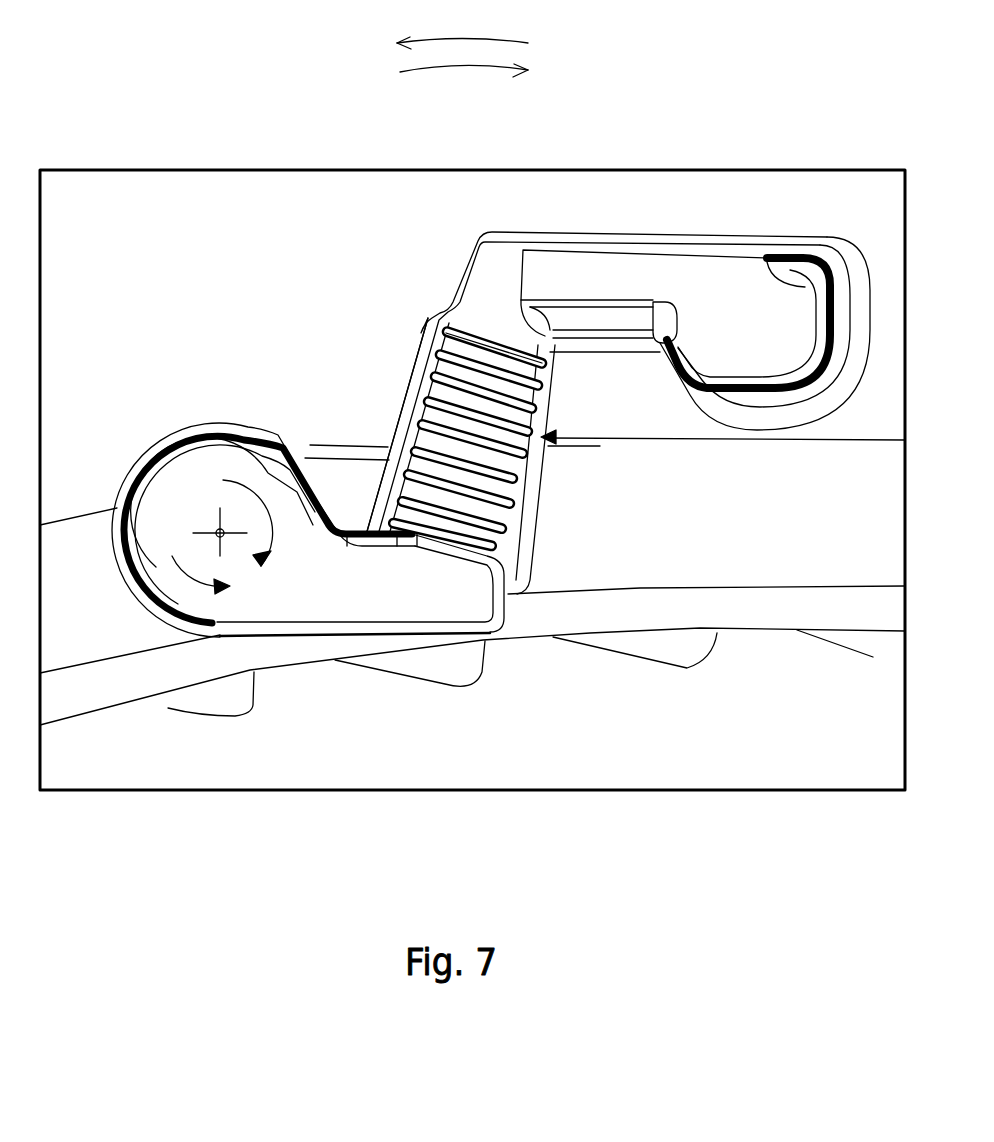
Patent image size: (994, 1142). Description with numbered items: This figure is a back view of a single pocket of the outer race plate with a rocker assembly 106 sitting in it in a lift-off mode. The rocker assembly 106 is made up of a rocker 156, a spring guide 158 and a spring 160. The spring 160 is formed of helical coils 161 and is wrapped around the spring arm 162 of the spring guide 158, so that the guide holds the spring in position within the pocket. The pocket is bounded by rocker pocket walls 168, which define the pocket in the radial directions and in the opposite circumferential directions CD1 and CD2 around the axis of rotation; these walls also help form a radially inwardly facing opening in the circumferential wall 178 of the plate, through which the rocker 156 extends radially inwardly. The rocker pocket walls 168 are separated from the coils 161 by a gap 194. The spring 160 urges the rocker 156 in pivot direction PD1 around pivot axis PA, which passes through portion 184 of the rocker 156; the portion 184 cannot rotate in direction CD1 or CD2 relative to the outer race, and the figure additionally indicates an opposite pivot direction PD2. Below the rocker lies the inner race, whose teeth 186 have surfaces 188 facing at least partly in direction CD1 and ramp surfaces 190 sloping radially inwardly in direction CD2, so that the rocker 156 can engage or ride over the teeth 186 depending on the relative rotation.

The rocker assembly 106 is at (413, 286).
The rocker 156 is at (317, 636).
The spring guide 158 is at (821, 370).
The spring 160 is at (423, 372).
The helical coils 161 is at (537, 390).
The spring arm 162 is at (440, 442).
The rocker pocket wall 168 is at (777, 253).
The circumferential wall 178 is at (193, 685).
The portion of rocker 184 is at (209, 466).
The teeth 186 is at (820, 633).
The surfaces 188 is at (700, 633).
The ramp surfaces 190 is at (840, 632).
The gap 194 is at (550, 437).
The pivot axis PA is at (219, 533).
The pivot direction PD1 is at (267, 505).
The second pivot direction PD2 is at (172, 556).
The circumferential direction CD1 is at (472, 40).
The circumferential direction CD2 is at (505, 72).